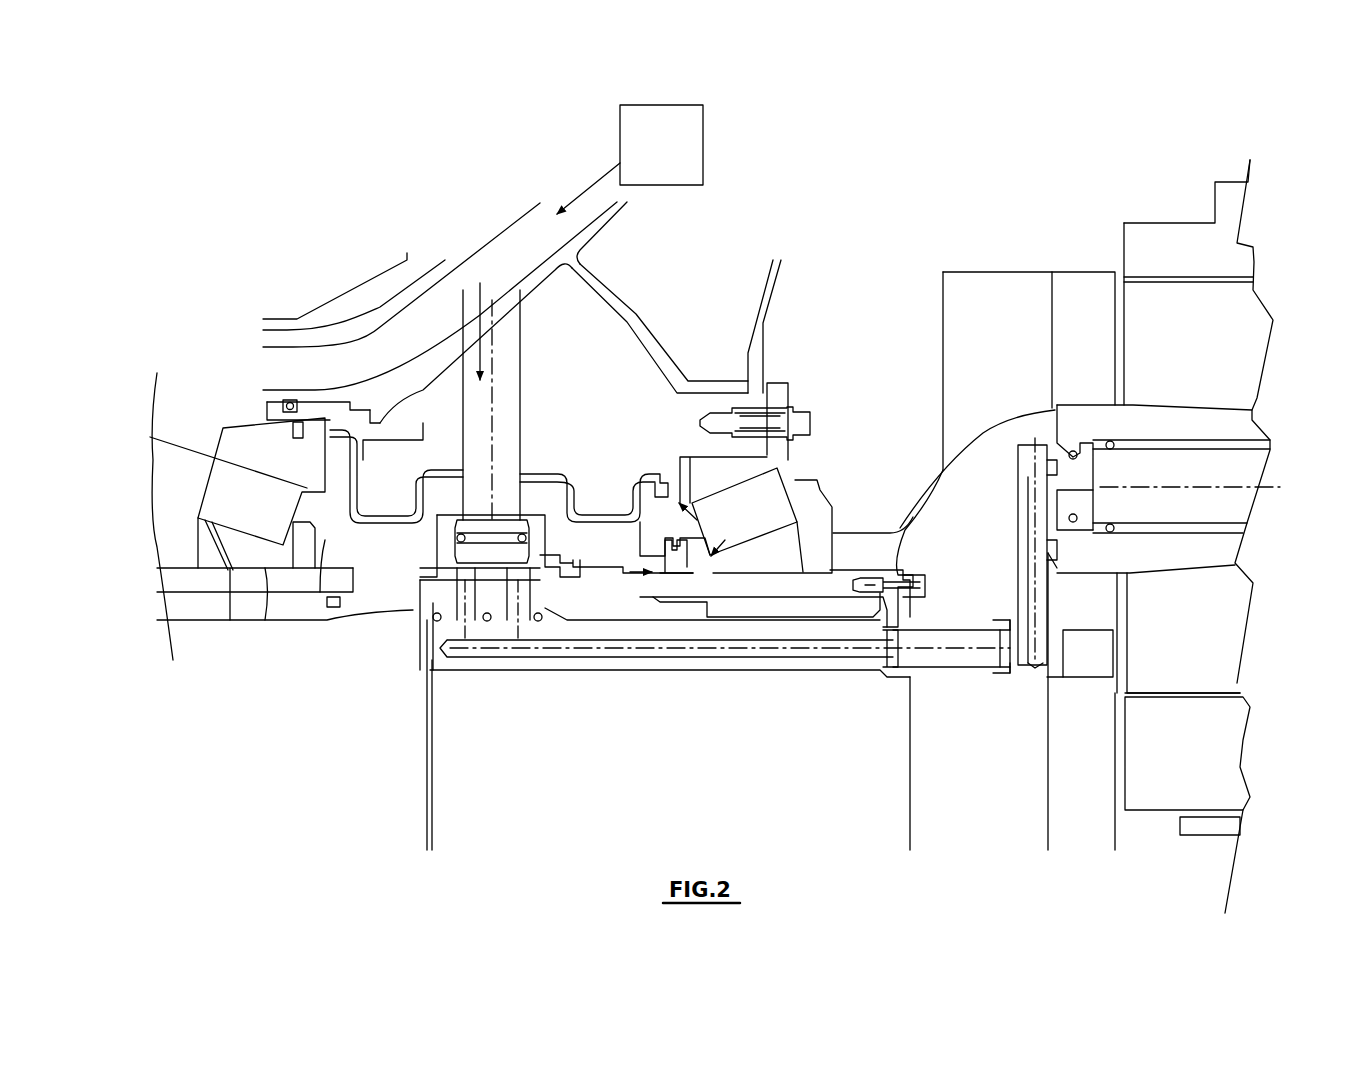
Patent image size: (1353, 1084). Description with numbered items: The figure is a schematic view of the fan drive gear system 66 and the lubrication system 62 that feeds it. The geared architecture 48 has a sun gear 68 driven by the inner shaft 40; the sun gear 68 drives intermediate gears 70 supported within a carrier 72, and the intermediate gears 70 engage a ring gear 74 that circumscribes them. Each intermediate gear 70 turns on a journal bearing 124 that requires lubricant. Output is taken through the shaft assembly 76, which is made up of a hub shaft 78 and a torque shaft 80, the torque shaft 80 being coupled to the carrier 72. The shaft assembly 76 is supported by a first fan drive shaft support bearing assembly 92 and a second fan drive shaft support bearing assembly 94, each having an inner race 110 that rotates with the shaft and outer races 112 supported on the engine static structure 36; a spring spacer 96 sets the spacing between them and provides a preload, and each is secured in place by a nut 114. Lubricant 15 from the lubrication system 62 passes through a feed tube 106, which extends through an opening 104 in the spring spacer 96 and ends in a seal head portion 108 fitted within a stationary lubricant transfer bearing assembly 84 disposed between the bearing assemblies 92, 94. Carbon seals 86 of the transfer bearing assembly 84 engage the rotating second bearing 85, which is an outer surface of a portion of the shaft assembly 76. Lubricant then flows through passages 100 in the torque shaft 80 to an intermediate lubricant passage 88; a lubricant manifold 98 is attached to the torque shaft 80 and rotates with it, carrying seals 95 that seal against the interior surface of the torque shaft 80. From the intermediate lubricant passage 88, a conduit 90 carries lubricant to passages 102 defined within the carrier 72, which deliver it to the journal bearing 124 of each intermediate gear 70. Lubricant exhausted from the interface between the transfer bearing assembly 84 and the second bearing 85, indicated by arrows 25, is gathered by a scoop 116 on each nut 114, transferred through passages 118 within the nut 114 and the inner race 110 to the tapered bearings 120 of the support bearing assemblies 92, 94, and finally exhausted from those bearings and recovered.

The lubricant 15 is at (483, 347).
The lubricant (arrows) 25 is at (193, 508).
The engine static structure 36 is at (650, 332).
The inner shaft 40 is at (1210, 838).
The geared architecture 48 is at (1152, 192).
The lubrication system 62 is at (676, 157).
The fan drive gear system 66 is at (890, 190).
The sun gear 68 is at (1205, 760).
The intermediate gears 70 is at (1205, 647).
The carrier 72 is at (1070, 300).
The ring gear 74 is at (1188, 245).
The shaft assembly 76 is at (328, 652).
The hub shaft 78 is at (300, 585).
The torque shaft 80 is at (793, 590).
The lubricant transfer bearing assembly 84 is at (437, 573).
The second bearing 85 is at (538, 580).
The carbon seals 86 is at (550, 568).
The intermediate lubricant passage 88 is at (587, 652).
The conduit 90 is at (953, 660).
The first fan drive shaft support bearing assembly 92 is at (805, 460).
The second fan drive shaft support bearing assembly 94 is at (187, 482).
The seals 95 is at (433, 670).
The spring spacer 96 is at (573, 486).
The lubricant manifold 98 is at (670, 665).
The passages 100 is at (470, 605).
The passages 102 is at (1030, 545).
The opening 104 is at (530, 465).
The feed tube 106 is at (503, 432).
The seal head portion 108 is at (465, 530).
The inner race 110 is at (233, 552).
The outer races 112 is at (250, 442).
The nut 114 is at (348, 485).
The scoop 116 is at (370, 547).
The passages 118 is at (280, 568).
The tapered bearings 120 is at (257, 500).
The journal bearing 124 is at (1148, 470).